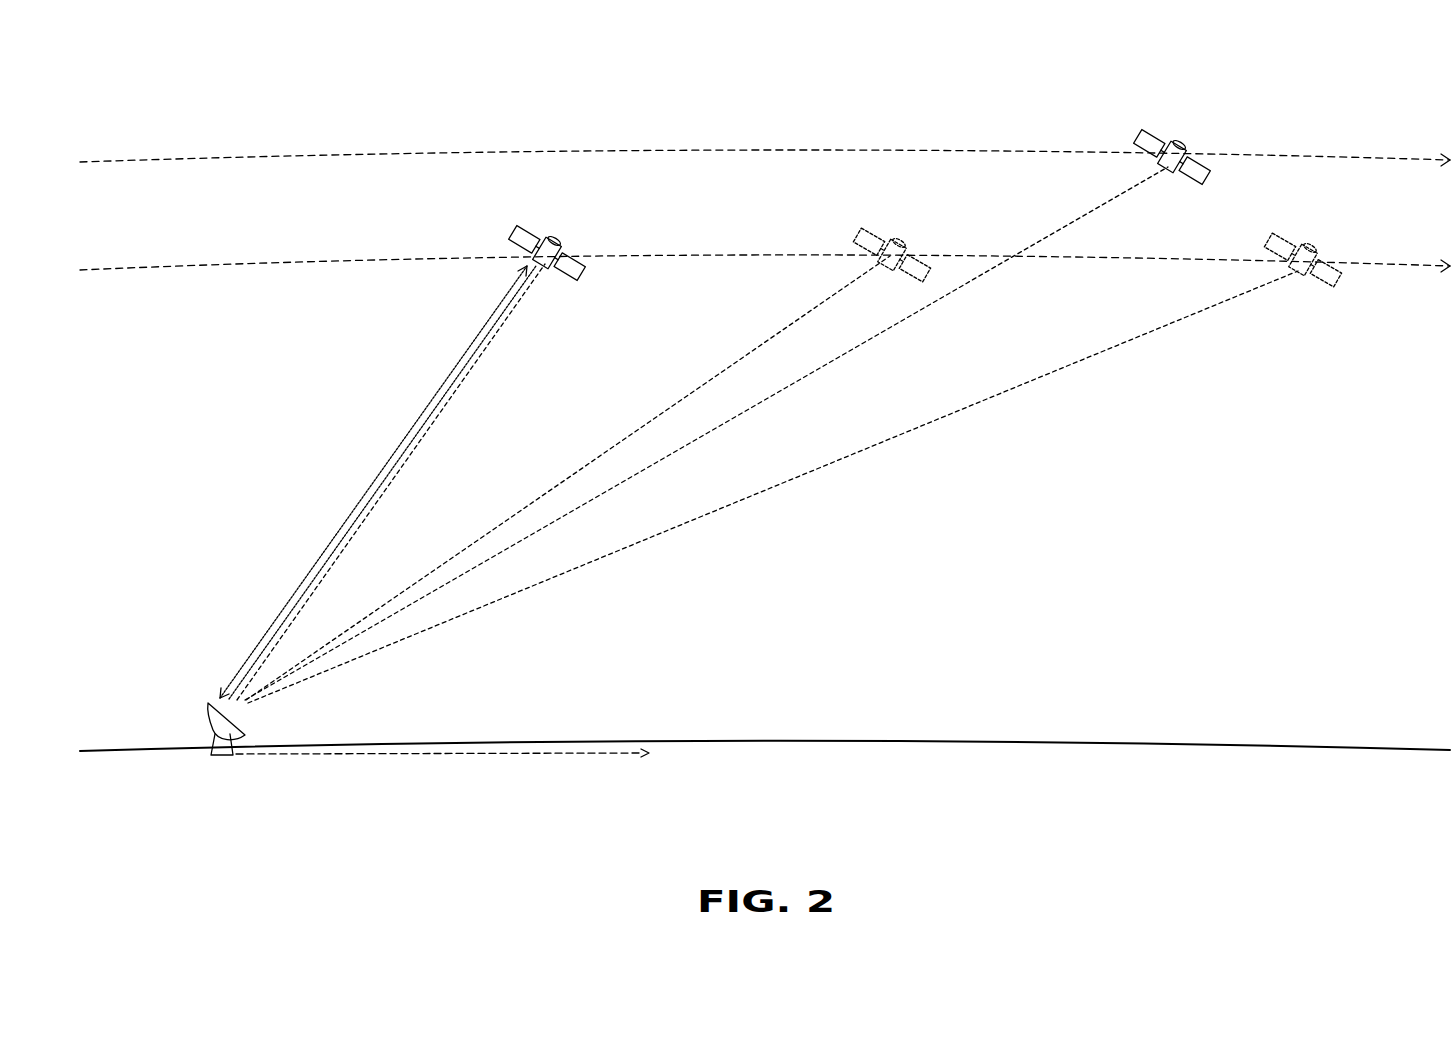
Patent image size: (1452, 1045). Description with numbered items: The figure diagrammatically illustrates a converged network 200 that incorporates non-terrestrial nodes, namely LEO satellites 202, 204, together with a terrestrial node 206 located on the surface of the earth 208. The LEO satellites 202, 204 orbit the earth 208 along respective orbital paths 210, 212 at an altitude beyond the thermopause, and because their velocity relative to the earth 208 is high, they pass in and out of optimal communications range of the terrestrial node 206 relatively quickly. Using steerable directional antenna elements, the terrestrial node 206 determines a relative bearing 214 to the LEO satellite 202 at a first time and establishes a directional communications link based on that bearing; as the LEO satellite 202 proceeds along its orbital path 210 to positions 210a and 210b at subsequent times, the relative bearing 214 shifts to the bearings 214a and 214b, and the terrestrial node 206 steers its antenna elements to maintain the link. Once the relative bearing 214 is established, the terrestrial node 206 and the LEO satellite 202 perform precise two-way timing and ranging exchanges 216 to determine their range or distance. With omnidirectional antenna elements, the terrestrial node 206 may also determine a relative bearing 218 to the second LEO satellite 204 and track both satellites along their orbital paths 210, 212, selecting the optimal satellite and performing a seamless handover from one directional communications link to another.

The converged network 200 is at (257, 99).
The LEO satellite 202 is at (520, 241).
The LEO satellite 204 is at (1141, 143).
The terrestrial node 206 is at (212, 735).
The earth 208 is at (1125, 741).
The orbital path 210 is at (228, 268).
The position 210a is at (862, 240).
The position 210b is at (1336, 276).
The orbital path 212 is at (268, 161).
The relative bearing 214 is at (416, 452).
The shifted relative bearing 214a is at (738, 363).
The shifted relative bearing 214b is at (893, 436).
The two-way timing and ranging exchanges 216 is at (348, 523).
The relative bearing 218 is at (881, 333).